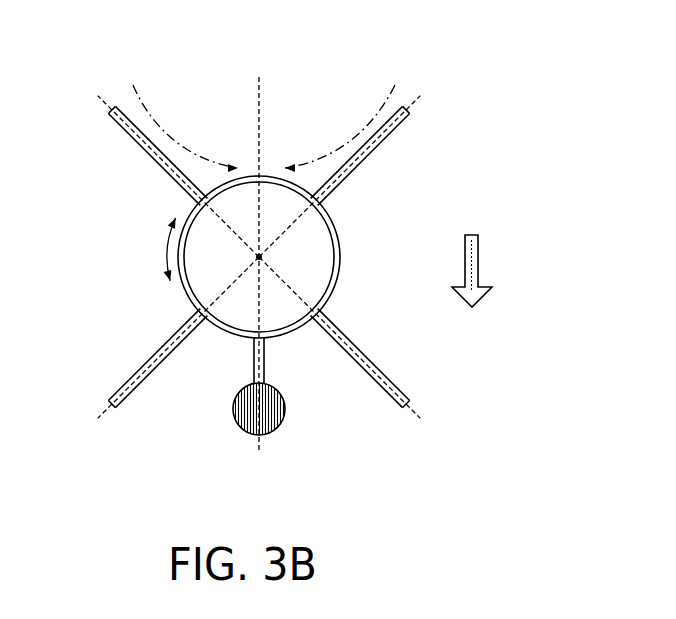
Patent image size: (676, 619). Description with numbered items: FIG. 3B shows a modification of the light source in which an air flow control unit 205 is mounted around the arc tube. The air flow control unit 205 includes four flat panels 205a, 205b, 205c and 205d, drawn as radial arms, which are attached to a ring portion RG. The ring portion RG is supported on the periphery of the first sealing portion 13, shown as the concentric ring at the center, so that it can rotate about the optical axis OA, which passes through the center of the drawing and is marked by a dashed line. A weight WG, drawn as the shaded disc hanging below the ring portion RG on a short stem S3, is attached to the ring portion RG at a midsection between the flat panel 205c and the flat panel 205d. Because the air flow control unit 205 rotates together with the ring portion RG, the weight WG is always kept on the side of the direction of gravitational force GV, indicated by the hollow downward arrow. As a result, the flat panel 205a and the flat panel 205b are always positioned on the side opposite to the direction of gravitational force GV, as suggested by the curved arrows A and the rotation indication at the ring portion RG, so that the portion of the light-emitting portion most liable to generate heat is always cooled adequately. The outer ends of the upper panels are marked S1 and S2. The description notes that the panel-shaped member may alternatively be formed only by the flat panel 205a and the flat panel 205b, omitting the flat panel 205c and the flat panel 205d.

The air flow control unit 205 is at (263, 219).
The flat panel 205a is at (378, 188).
The flat panel 205b is at (143, 189).
The flat panel 205c is at (160, 347).
The flat panel 205d is at (332, 328).
The first sealing portion 13 is at (236, 320).
The first end surface S1 is at (412, 107).
The second end surface S2 is at (107, 107).
The stem S3 is at (265, 370).
The optical axis OA is at (262, 257).
The weight WG is at (233, 421).
The ring portion RG is at (183, 207).
The direction of gravitational force GV is at (476, 268).
The rotation arc A is at (146, 110).